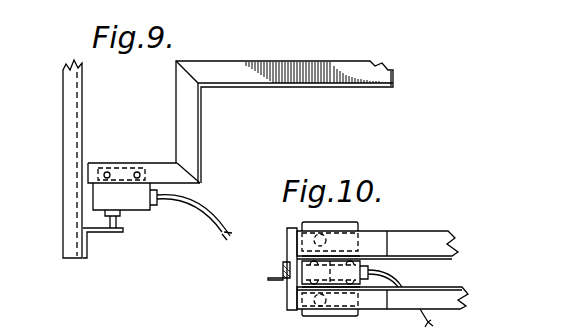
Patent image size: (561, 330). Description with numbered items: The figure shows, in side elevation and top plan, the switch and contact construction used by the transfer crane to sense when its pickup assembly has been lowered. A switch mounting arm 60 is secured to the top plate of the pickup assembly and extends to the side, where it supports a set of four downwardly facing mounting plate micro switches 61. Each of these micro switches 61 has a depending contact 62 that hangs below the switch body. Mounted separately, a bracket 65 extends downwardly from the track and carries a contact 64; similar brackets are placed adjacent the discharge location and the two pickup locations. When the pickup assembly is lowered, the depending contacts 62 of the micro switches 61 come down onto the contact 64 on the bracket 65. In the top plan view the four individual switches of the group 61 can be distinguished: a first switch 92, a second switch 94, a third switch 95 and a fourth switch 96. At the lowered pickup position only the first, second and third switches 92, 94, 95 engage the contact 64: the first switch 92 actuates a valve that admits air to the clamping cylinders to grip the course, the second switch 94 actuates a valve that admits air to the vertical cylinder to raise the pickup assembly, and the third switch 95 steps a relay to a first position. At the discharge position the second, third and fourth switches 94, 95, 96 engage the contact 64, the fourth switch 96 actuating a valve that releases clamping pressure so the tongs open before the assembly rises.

In FIG. 9, the switch mounting arm 60 is at (263, 70).
In FIG. 10, the switch mounting arm 60 is at (432, 248).
In FIG. 9, the mounting plate micro switches 61 is at (117, 197).
In FIG. 10, the mounting plate micro switches 61 is at (380, 231).
In FIG. 9, the depending contacts 62 is at (118, 223).
In FIG. 9, the contact 64 is at (104, 233).
In FIG. 10, the contact 64 is at (298, 222).
In FIG. 9, the bracket 65 is at (66, 148).
In FIG. 10, the bracket 65 is at (272, 280).
In FIG. 10, the first switch 92 is at (314, 232).
In FIG. 10, the second switch 94 is at (296, 249).
In FIG. 10, the third switch 95 is at (306, 296).
In FIG. 10, the fourth switch 96 is at (312, 310).